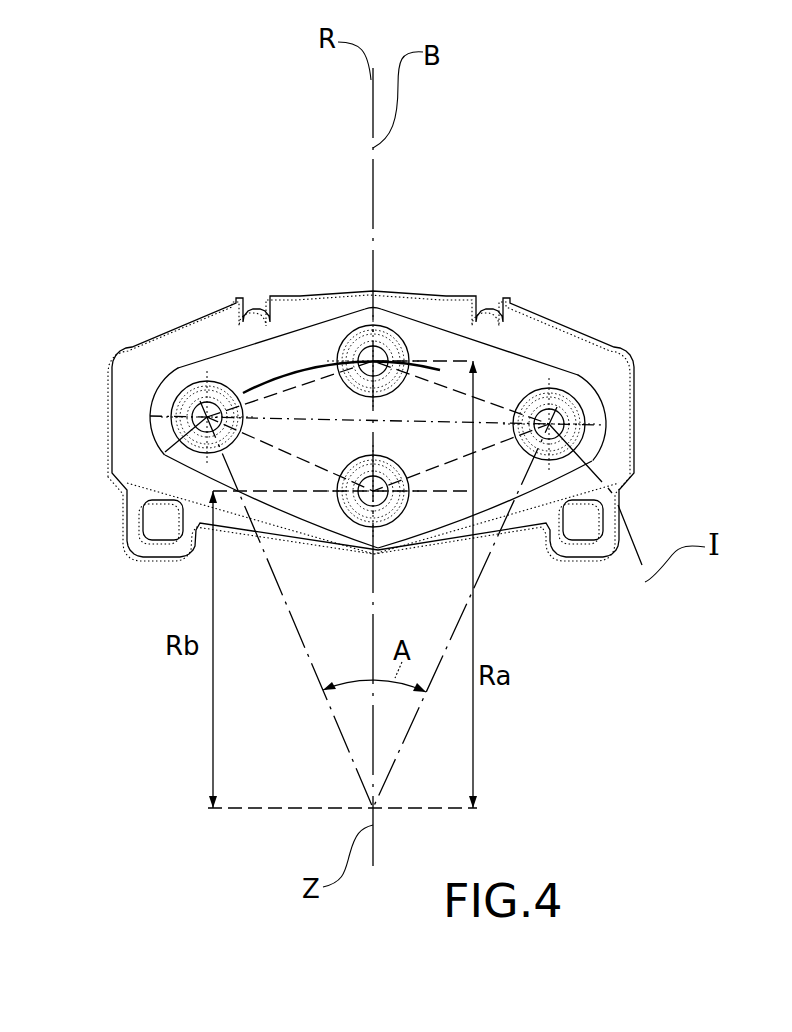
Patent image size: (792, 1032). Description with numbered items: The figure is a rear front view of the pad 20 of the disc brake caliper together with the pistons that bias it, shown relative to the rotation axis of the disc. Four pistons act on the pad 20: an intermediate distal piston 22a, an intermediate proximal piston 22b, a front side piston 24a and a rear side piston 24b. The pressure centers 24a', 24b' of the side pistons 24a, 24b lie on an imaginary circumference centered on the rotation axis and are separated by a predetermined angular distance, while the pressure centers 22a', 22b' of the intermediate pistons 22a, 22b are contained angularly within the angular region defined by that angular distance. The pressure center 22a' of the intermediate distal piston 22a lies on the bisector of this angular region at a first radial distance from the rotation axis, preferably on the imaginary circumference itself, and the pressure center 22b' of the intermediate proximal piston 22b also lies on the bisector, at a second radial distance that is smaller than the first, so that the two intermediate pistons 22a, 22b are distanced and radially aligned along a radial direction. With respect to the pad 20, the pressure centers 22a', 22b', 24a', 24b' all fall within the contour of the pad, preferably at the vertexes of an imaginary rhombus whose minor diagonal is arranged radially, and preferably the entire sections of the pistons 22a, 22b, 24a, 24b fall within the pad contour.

The pad 20 is at (585, 155).
The intermediate distal piston 22a is at (395, 323).
The pressure center of the intermediate distal piston 22a' is at (330, 250).
The intermediate proximal piston 22b is at (357, 530).
The pressure center of the intermediate proximal piston 22b' is at (394, 524).
The front side piston 24a is at (167, 423).
The pressure center of the front side piston 24a' is at (174, 332).
The rear side piston 24b is at (595, 422).
The pressure center of the rear side piston 24b' is at (615, 345).